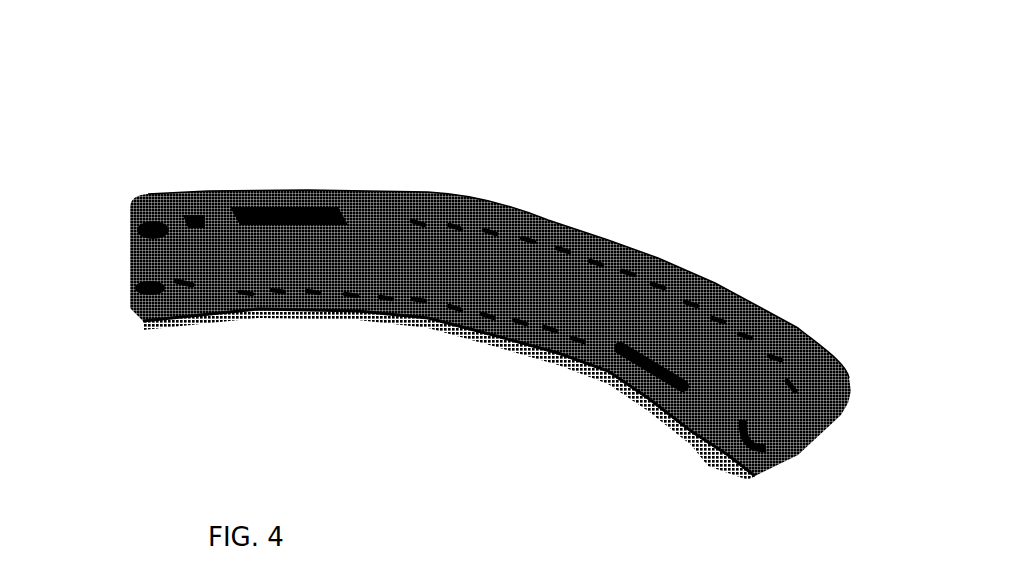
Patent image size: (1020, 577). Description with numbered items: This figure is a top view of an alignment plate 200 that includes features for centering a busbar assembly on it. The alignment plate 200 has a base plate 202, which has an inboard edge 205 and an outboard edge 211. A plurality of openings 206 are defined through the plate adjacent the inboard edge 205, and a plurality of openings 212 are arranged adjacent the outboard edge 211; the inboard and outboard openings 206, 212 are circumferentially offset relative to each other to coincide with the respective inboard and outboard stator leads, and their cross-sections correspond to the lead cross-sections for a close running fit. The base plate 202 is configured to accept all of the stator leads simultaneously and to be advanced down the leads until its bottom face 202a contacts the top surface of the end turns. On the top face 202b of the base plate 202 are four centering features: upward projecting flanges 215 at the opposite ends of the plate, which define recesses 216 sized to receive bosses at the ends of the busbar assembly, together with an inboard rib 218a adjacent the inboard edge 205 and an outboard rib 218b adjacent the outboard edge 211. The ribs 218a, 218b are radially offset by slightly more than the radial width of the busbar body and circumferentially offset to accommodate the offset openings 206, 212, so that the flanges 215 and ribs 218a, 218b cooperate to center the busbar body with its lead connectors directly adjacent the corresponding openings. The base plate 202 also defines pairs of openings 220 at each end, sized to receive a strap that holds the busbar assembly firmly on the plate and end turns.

The alignment plate 200 is at (416, 170).
The base plate 202 is at (450, 197).
The bottom face 202a is at (162, 317).
The top face 202b is at (442, 272).
The inboard edge 205 is at (680, 422).
The openings 206 is at (478, 314).
The outboard edge 211 is at (760, 305).
The openings 212 is at (685, 297).
The flanges 215 is at (130, 227).
The recesses 216 is at (137, 230).
The inboard rib 218a is at (645, 342).
The outboard rib 218b is at (297, 198).
The openings 220 is at (172, 280).